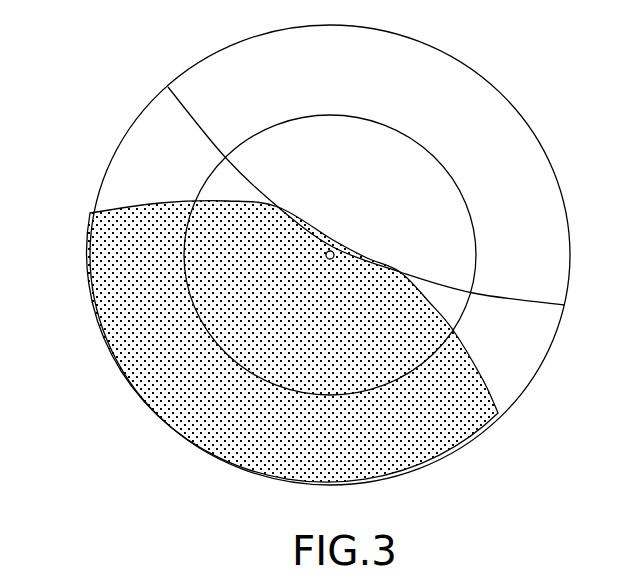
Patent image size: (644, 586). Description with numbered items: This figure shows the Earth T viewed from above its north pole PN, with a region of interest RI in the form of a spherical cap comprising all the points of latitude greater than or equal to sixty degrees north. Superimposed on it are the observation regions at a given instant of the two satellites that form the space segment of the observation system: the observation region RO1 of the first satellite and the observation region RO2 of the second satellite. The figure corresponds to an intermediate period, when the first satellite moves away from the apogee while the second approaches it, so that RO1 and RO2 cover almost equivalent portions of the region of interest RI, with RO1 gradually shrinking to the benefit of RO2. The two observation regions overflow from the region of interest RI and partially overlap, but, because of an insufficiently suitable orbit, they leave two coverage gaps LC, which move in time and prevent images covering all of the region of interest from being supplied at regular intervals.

The Earth T is at (97, 321).
The observation region of satellite SAT2 RO2 is at (468, 109).
The observation region of satellite SAT1 RO1 is at (200, 396).
The region of interest RI is at (397, 352).
The coverage gaps LC is at (225, 187).
The north pole PN is at (326, 262).